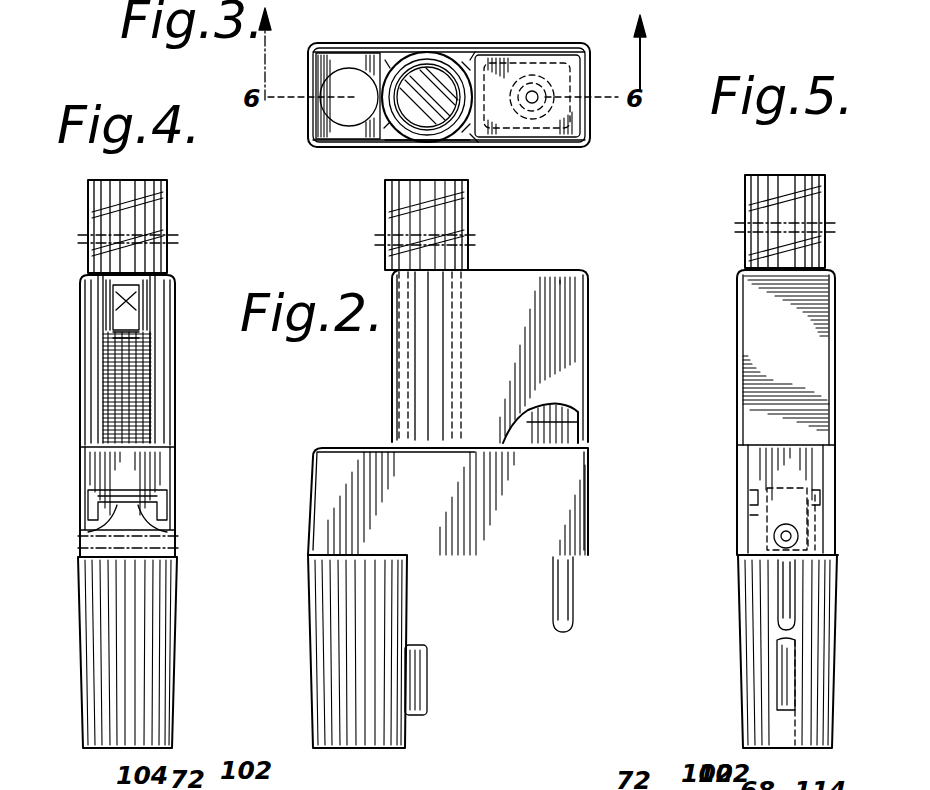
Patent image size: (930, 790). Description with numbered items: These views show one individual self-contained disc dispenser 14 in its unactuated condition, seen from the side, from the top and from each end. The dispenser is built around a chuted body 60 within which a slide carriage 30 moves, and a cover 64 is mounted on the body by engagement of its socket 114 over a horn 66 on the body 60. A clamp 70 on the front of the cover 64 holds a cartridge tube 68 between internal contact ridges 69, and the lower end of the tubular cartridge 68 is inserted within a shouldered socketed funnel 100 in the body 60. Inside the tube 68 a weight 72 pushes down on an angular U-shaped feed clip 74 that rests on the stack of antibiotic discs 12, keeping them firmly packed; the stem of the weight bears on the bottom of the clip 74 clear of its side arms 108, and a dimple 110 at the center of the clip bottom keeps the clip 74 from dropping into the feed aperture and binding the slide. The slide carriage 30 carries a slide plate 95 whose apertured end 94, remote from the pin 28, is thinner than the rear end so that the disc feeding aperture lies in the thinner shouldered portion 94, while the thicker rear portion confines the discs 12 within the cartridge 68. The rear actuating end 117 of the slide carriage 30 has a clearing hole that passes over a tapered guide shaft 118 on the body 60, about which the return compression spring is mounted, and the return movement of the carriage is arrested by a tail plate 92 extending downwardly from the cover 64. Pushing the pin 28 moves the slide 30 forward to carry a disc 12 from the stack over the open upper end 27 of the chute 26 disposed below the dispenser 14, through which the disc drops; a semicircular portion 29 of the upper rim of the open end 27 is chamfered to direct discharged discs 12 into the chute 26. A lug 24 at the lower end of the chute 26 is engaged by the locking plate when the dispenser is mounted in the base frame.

In FIG. 4, the antibiotic disc 12 is at (104, 386).
In FIG. 3, the individual self-contained disc dispenser 14 is at (556, 144).
In FIG. 2, the individual self-contained disc dispenser 14 is at (594, 362).
In FIG. 4, the individual self-contained disc dispenser 14 is at (180, 465).
In FIG. 5, the individual self-contained disc dispenser 14 is at (733, 470).
In FIG. 2, the lug 24 is at (428, 690).
In FIG. 5, the lug 24 is at (788, 690).
In FIG. 2, the chute 26 is at (340, 663).
In FIG. 4, the chute 26 is at (108, 663).
In FIG. 5, the chute 26 is at (760, 660).
In FIG. 3, the open upper end of chute 27 is at (348, 110).
In FIG. 2, the pin 28 is at (575, 620).
In FIG. 5, the pin 28 is at (790, 598).
In FIG. 3, the semicircular portion of upper rim 29 is at (322, 88).
In FIG. 4, the slide carriage 30 is at (88, 535).
In FIG. 3, the chuted body 60 is at (377, 150).
In FIG. 2, the chuted body 60 is at (311, 545).
In FIG. 4, the chuted body 60 is at (182, 524).
In FIG. 5, the chuted body 60 is at (840, 490).
In FIG. 3, the cover 64 is at (588, 124).
In FIG. 2, the cover 64 is at (590, 311).
In FIG. 4, the cover 64 is at (178, 386).
In FIG. 5, the cover 64 is at (836, 346).
In FIG. 3, the horn 66 is at (540, 82).
In FIG. 3, the cartridge tube 68 is at (428, 54).
In FIG. 2, the cartridge tube 68 is at (426, 225).
In FIG. 4, the cartridge tube 68 is at (170, 226).
In FIG. 5, the cartridge tube 68 is at (815, 247).
In FIG. 3, the internal contact ridge 69 is at (440, 64).
In FIG. 2, the internal contact ridge 69 is at (398, 290).
In FIG. 3, the clamp 70 is at (466, 126).
In FIG. 2, the clamp 70 is at (422, 380).
In FIG. 4, the clamp 70 is at (90, 340).
In FIG. 3, the weight 72 is at (428, 96).
In FIG. 4, the weight 72 is at (166, 262).
In FIG. 4, the feed clip 74 is at (152, 303).
In FIG. 5, the tail plate 92 is at (808, 536).
In FIG. 4, the apertured end of slide plate 94 is at (176, 547).
In FIG. 4, the slide plate 95 is at (90, 503).
In FIG. 5, the slide plate 95 is at (740, 506).
In FIG. 3, the shouldered socketed funnel 100 is at (392, 132).
In FIG. 4, the side arm of clip 108 is at (122, 292).
In FIG. 4, the dimple 110 is at (152, 344).
In FIG. 3, the socket 114 is at (532, 120).
In FIG. 5, the rear actuating end of slide carriage 117 is at (778, 520).
In FIG. 5, the tapered guide shaft 118 is at (796, 540).